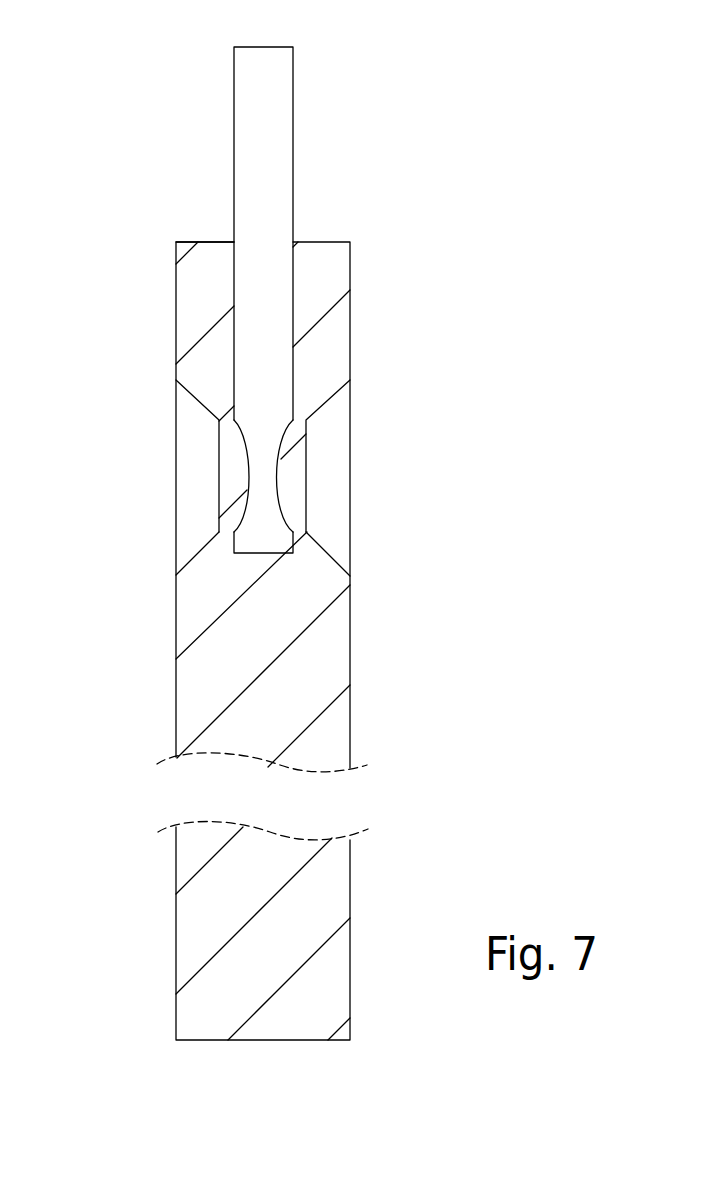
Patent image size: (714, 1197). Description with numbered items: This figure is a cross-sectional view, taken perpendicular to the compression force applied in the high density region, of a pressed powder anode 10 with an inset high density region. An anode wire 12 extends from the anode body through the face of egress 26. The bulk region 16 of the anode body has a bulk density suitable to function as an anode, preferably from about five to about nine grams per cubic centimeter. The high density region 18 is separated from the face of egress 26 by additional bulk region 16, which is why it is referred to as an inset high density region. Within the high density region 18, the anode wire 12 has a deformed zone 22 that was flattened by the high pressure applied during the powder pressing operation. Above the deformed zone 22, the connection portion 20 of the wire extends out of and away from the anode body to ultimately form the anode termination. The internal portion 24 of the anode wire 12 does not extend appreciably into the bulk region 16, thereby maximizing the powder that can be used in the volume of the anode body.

The pressed powder anode 10 is at (335, 543).
The anode wire 12 is at (320, 300).
The bulk region 16 is at (320, 288).
The high density region 18 is at (307, 462).
The connection portion 20 is at (258, 139).
The deformed zone 22 is at (248, 478).
The internal portion 24 is at (277, 545).
The face of egress 26 is at (210, 240).